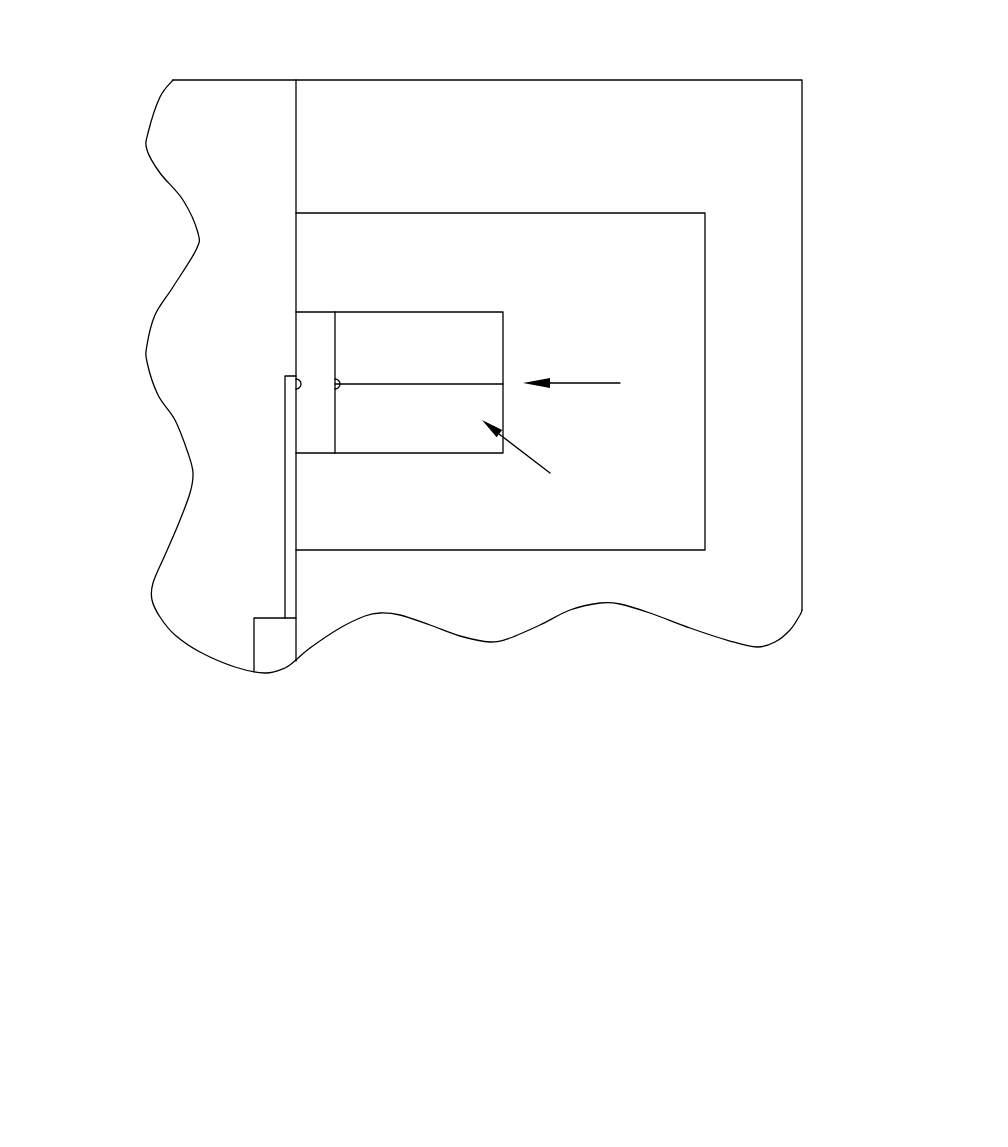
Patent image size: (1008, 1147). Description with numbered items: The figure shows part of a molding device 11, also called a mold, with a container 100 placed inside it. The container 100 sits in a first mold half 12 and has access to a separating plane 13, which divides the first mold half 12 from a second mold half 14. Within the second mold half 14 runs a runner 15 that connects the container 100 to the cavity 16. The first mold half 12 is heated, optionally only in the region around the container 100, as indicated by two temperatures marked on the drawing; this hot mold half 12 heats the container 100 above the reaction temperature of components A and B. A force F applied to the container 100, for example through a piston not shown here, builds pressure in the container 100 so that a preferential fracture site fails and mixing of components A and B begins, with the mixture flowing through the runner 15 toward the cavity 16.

The molding device 11 is at (150, 279).
The first mold half 12 is at (762, 100).
The separating plane 13 is at (297, 117).
The second mold half 14 is at (185, 110).
The runner 15 is at (287, 505).
The cavity 16 is at (270, 640).
The container 100 is at (455, 312).